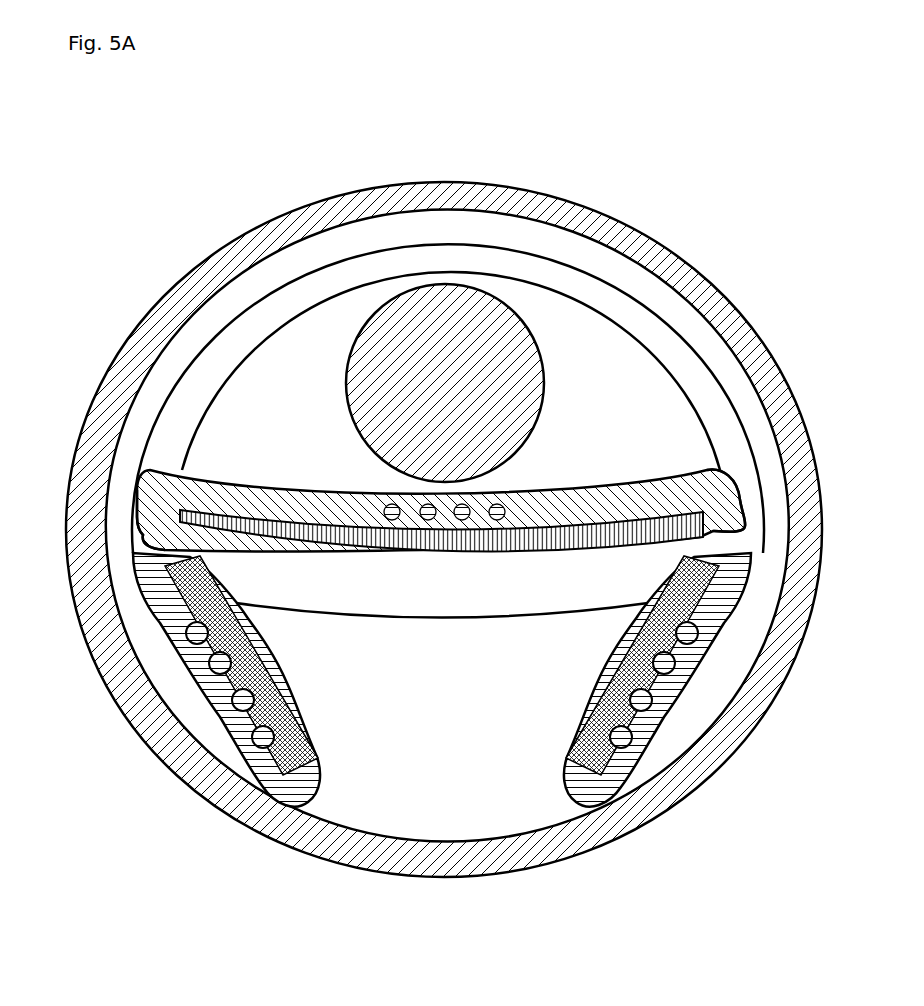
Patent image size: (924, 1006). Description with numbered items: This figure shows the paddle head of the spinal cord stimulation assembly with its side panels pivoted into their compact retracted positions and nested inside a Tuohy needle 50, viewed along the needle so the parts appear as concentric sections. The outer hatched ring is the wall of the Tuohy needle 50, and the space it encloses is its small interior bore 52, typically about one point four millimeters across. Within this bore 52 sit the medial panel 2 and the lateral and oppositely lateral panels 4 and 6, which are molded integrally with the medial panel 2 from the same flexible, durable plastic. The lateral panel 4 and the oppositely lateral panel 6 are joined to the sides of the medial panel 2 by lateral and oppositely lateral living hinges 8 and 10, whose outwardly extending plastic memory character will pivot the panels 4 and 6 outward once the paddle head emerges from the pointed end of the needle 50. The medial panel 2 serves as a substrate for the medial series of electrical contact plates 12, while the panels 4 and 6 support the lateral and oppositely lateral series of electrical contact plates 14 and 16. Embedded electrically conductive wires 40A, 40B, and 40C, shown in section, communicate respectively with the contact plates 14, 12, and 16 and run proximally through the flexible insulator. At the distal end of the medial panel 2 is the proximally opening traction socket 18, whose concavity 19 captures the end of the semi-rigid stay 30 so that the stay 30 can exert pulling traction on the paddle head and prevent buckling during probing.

The medial panel 2 is at (272, 498).
The lateral panel 4 is at (567, 805).
The oppositely lateral panel 6 is at (288, 790).
The lateral living hinge 8 is at (742, 507).
The oppositely lateral living hinge 10 is at (140, 553).
The medial series of electrical contact plates 12 is at (533, 533).
The lateral series of electrical contact plates 14 is at (590, 705).
The oppositely lateral series of electrical contact plates 16 is at (290, 705).
The stay end receiving traction socket 18 is at (272, 303).
The concavity 19 is at (645, 380).
The semi-rigid stay 30 is at (455, 375).
The electrically conductive wires 40A is at (630, 625).
The electrically conductive wires 40B is at (427, 520).
The electrically conductive wires 40C is at (253, 623).
The Tuohy needle 50 is at (578, 218).
The interior bore 52 is at (385, 232).